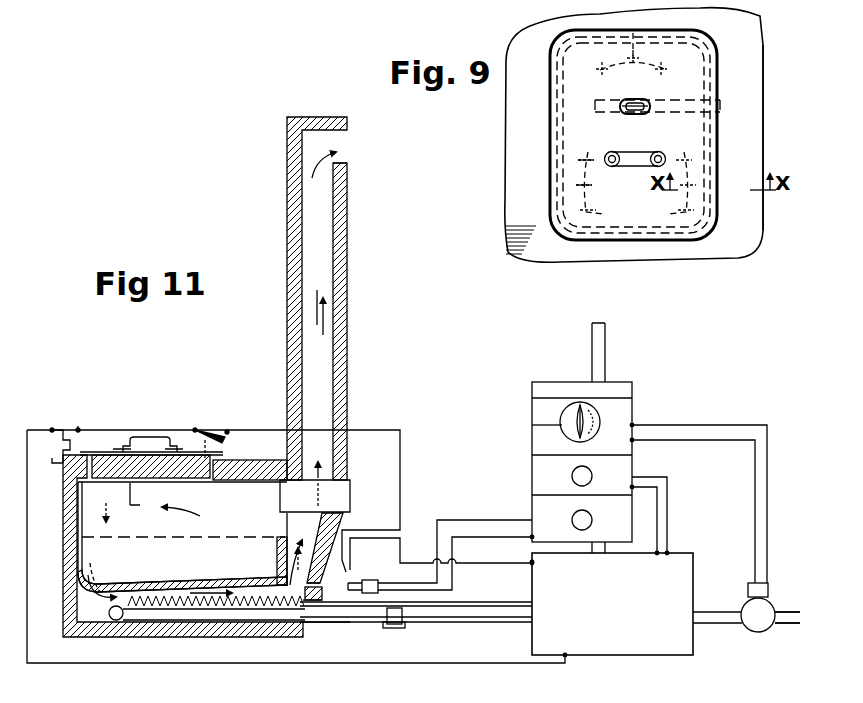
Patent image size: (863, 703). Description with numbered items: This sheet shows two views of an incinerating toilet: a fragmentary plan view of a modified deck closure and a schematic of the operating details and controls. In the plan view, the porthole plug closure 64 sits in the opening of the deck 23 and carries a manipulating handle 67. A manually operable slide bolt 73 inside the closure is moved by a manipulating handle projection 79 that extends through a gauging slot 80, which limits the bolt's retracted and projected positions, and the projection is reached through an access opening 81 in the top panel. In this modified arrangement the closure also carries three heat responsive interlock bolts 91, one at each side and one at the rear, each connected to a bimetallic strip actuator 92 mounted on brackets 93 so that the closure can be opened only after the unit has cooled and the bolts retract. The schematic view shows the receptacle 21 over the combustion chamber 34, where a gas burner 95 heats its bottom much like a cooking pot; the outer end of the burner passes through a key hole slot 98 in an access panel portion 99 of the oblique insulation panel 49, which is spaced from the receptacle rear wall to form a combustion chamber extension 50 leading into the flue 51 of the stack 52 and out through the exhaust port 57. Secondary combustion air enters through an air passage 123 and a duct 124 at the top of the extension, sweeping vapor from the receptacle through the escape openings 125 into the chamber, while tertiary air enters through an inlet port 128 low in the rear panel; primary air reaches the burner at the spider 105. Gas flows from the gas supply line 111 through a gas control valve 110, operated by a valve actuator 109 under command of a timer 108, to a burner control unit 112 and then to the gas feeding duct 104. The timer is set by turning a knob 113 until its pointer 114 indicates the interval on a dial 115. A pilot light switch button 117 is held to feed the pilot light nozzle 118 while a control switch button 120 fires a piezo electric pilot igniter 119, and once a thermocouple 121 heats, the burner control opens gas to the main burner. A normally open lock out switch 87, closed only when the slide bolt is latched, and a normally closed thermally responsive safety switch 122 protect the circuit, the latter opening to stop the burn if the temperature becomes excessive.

In FIG. 11, the receptacle 21 is at (88, 605).
In FIG. 9, the deck 23 is at (755, 125).
In FIG. 11, the combustion chamber 34 is at (172, 598).
In FIG. 11, the oblique insulation panel 49 is at (334, 528).
In FIG. 11, the combustion chamber extension 50 is at (288, 525).
In FIG. 11, the flue 51 is at (322, 378).
In FIG. 11, the stack 52 is at (347, 293).
In FIG. 11, the exhaust port 57 is at (338, 162).
In FIG. 9, the porthole plug closure 64 is at (722, 52).
In FIG. 11, the porthole plug closure 64 is at (109, 450).
In FIG. 9, the manipulating handle 67 is at (641, 166).
In FIG. 9, the slide bolt 73 is at (708, 101).
In FIG. 9, the manipulating handle projection 79 is at (645, 113).
In FIG. 9, the gauging slot 80 is at (630, 112).
In FIG. 9, the access opening 81 is at (648, 101).
In FIG. 11, the lock out switch 87 is at (203, 428).
In FIG. 9, the interlock bolts 91 is at (624, 62).
In FIG. 9, the bimetallic strip actuator 92 is at (596, 193).
In FIG. 9, the brackets 93 is at (578, 162).
In FIG. 11, the gas burner 95 is at (342, 625).
In FIG. 11, the key hole slot 98 is at (293, 633).
In FIG. 11, the access panel portion 99 is at (315, 612).
In FIG. 11, the gas feeding duct 104 is at (470, 620).
In FIG. 11, the spider 105 is at (402, 613).
In FIG. 11, the timer 108 is at (632, 410).
In FIG. 11, the valve actuator 109 is at (747, 588).
In FIG. 11, the gas control valve 110 is at (766, 611).
In FIG. 11, the gas supply line 111 is at (784, 625).
In FIG. 11, the burner control unit 112 is at (665, 646).
In FIG. 11, the knob 113 is at (562, 426).
In FIG. 11, the pointer 114 is at (578, 410).
In FIG. 11, the dial 115 is at (598, 410).
In FIG. 11, the pilot light switch button 117 is at (572, 476).
In FIG. 11, the pilot light nozzle 118 is at (364, 622).
In FIG. 11, the piezo electric pilot igniter 119 is at (366, 580).
In FIG. 11, the control switch button 120 is at (572, 520).
In FIG. 11, the thermocouple 121 is at (343, 575).
In FIG. 11, the thermally responsive safety switch 122 is at (70, 425).
In FIG. 11, the air passage 123 is at (333, 481).
In FIG. 11, the duct 124 is at (292, 648).
In FIG. 11, the escape openings 125 is at (140, 493).
In FIG. 11, the inlet port 128 is at (282, 587).